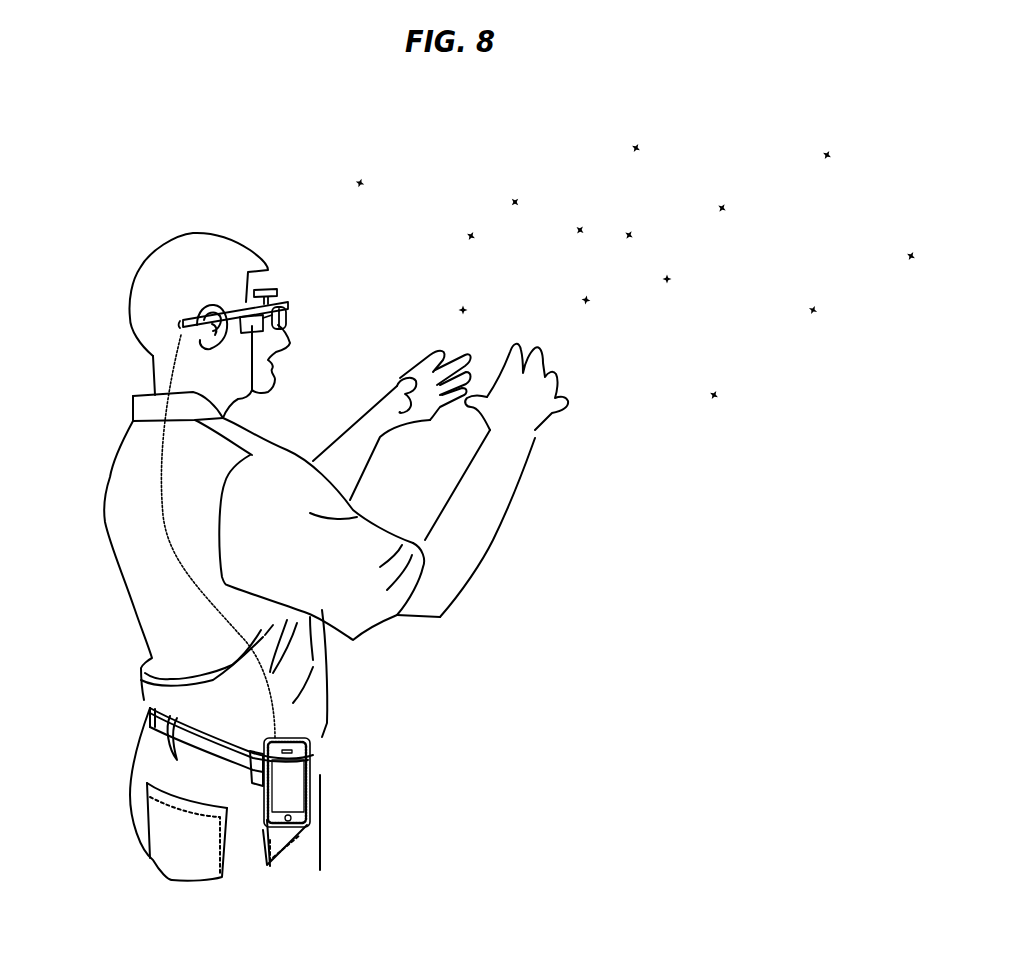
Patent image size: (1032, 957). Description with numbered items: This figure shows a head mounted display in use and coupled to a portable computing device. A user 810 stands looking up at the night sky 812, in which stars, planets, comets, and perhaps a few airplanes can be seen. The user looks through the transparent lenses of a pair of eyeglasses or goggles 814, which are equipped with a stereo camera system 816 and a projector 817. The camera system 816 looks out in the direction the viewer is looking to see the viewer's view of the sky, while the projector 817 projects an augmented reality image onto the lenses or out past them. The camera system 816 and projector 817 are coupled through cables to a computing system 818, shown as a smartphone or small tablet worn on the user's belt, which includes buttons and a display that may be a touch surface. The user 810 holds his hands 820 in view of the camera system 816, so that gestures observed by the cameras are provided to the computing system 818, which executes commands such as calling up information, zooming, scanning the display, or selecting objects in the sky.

The user 810 is at (319, 557).
The night sky 812 is at (766, 264).
The eyeglasses or goggles 814 is at (287, 317).
The stereo camera system 816 is at (272, 290).
The projector 817 is at (252, 392).
The computing system 818 is at (300, 788).
The hands 820 is at (393, 390).